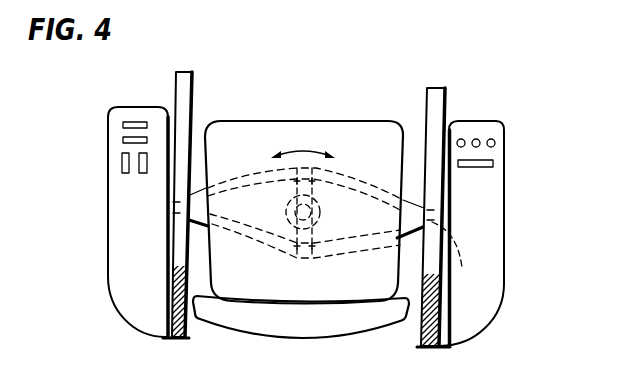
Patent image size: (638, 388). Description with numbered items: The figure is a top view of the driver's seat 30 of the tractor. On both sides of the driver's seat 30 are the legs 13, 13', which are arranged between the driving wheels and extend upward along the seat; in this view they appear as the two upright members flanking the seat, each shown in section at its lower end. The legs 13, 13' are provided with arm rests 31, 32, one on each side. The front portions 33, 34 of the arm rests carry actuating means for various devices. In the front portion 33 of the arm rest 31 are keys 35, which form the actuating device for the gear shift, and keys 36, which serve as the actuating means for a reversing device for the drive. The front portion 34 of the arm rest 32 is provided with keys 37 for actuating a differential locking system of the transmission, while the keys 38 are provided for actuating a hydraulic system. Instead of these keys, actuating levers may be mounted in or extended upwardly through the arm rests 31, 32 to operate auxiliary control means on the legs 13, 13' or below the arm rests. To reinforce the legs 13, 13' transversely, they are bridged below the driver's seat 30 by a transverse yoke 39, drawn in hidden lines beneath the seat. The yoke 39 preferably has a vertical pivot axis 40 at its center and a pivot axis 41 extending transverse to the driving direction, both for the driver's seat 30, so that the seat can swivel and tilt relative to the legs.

The leg 13 is at (202, 219).
The leg 13' is at (453, 230).
The driver's seat 30 is at (260, 128).
The arm rest 31 is at (113, 282).
The arm rest 32 is at (482, 308).
The front portion of the arm rest 33 is at (116, 146).
The front portion of the arm rest 34 is at (510, 153).
The keys 35 is at (138, 137).
The keys 36 is at (143, 171).
The keys 37 is at (478, 167).
The keys 38 is at (490, 139).
The transverse yoke 39 is at (398, 238).
The vertical pivot axis 40 is at (321, 212).
The pivot axis 41 is at (457, 258).